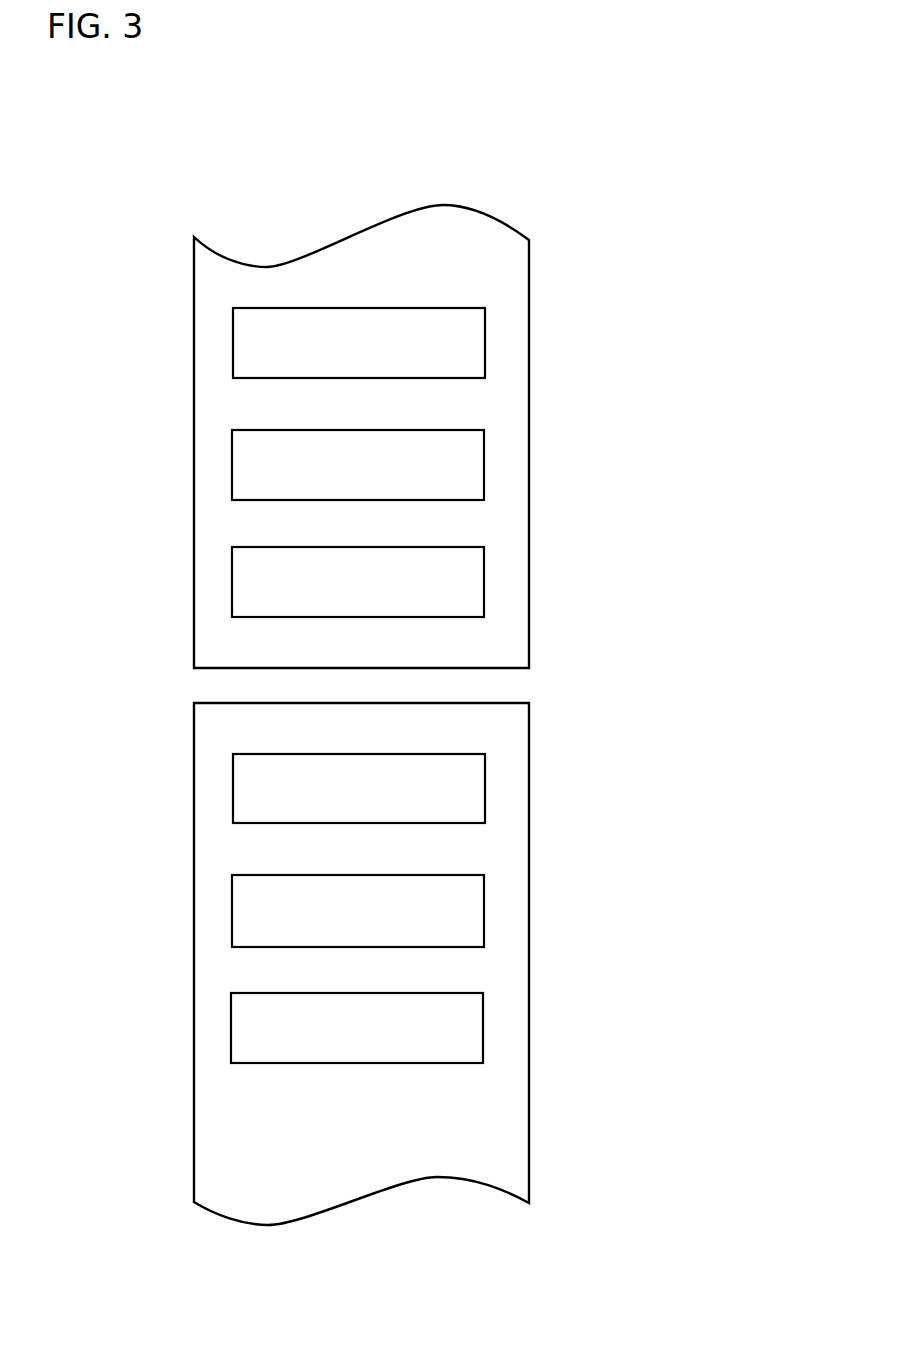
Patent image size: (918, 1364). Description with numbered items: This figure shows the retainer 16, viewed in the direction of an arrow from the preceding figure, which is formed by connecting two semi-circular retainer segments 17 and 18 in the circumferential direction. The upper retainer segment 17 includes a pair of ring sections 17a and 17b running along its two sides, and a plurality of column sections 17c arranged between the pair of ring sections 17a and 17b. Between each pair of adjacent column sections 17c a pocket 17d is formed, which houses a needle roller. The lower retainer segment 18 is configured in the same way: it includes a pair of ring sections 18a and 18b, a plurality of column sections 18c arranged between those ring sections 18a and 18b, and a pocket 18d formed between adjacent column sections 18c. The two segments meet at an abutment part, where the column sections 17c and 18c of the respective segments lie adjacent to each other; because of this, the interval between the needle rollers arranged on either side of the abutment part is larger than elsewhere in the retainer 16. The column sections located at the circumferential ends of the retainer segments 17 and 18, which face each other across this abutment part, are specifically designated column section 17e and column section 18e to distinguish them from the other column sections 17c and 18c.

The retainer 16 is at (136, 212).
The retainer segment 17 is at (547, 280).
The ring section 17a is at (508, 466).
The ring section 17b is at (213, 448).
The column sections 17c is at (452, 408).
The pocket 17d is at (258, 346).
The column section 17e is at (447, 642).
The retainer segment 18 is at (547, 1134).
The ring section 18a is at (505, 914).
The ring section 18b is at (213, 928).
The column sections 18c is at (452, 735).
The pocket 18d is at (258, 790).
The column section 18e is at (447, 728).